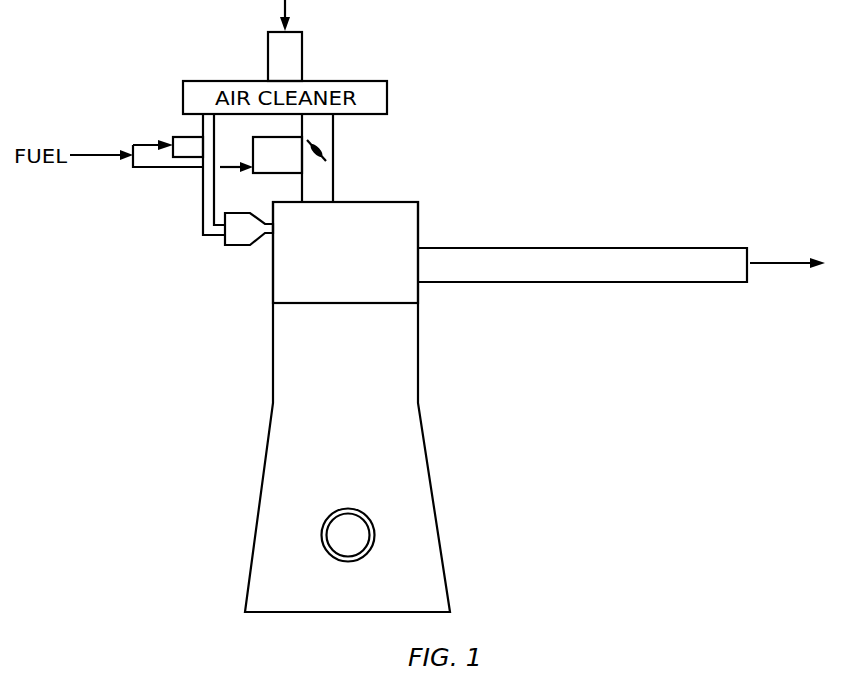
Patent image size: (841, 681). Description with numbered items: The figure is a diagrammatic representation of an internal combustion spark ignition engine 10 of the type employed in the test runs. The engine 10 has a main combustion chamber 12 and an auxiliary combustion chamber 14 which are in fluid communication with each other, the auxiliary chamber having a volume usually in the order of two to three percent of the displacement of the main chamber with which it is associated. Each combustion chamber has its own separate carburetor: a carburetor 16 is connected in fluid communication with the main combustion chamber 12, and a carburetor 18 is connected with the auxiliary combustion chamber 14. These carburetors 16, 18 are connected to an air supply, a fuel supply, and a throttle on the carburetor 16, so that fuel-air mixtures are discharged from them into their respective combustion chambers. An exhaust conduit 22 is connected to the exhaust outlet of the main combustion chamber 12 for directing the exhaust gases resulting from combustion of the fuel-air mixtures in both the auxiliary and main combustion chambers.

The internal combustion spark ignition engine 10 is at (327, 407).
The main combustion chamber 12 is at (360, 266).
The auxiliary combustion chamber 14 is at (231, 246).
The carburetor 16 is at (292, 165).
The carburetor 18 is at (173, 137).
The exhaust conduit 22 is at (548, 282).